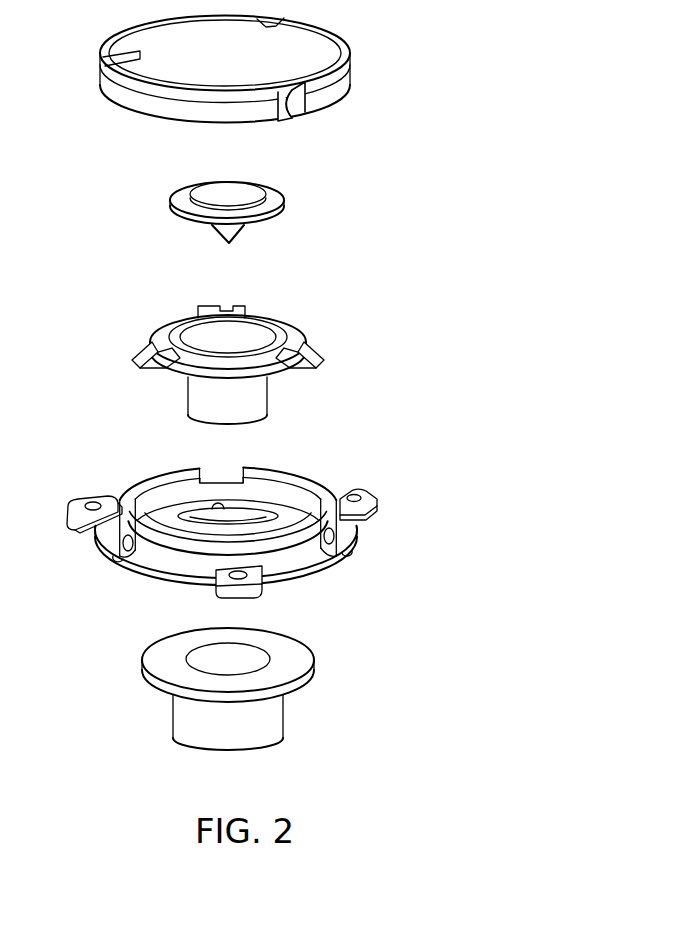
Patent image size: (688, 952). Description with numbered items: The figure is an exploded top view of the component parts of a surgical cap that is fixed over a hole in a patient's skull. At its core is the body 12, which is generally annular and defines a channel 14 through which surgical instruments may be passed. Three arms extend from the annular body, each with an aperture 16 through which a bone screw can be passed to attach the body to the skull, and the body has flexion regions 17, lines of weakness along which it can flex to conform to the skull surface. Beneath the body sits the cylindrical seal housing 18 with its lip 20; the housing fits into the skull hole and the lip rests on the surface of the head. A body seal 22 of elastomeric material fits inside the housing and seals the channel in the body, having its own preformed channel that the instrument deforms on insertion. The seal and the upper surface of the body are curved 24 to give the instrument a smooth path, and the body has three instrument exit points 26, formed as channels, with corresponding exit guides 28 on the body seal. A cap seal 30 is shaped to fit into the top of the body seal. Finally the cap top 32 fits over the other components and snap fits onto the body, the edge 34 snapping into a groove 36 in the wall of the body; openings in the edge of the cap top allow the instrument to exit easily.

The body 12 is at (241, 517).
The channel 14 is at (240, 512).
The aperture 16 is at (93, 501).
The flexion region 17 is at (118, 562).
The seal housing 18 is at (247, 689).
The lip 20 is at (153, 688).
The body seal 22 is at (234, 347).
The curved surface 24 is at (248, 344).
The instrument exit point 26 is at (213, 478).
The exit guide 28 is at (150, 346).
The cap seal 30 is at (283, 197).
The cap top 32 is at (352, 54).
The edge 34 is at (347, 93).
The groove 36 is at (352, 553).